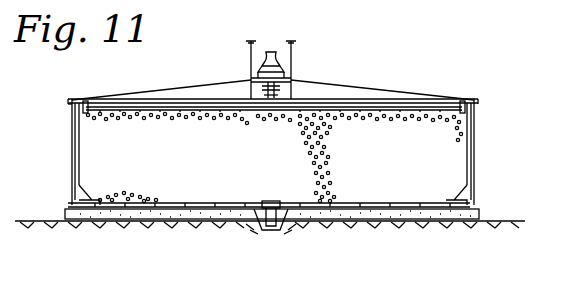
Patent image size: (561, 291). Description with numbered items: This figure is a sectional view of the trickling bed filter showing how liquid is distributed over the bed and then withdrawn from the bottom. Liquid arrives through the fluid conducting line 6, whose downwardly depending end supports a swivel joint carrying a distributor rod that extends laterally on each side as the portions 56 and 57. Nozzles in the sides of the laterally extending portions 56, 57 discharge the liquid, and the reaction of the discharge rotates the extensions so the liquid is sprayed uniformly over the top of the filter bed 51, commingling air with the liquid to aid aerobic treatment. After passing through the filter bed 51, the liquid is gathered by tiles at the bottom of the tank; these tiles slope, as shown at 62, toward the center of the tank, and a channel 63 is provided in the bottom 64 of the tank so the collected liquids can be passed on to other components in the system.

The fluid conducting line 6 is at (266, 58).
The filter bed 51 is at (176, 137).
The laterally extending portion of distributor rod 56 is at (157, 98).
The laterally extending portion of distributor rod 57 is at (384, 98).
The slope of the tiles 62 is at (308, 196).
The channel 63 is at (270, 232).
The bottom of the tank 64 is at (212, 222).